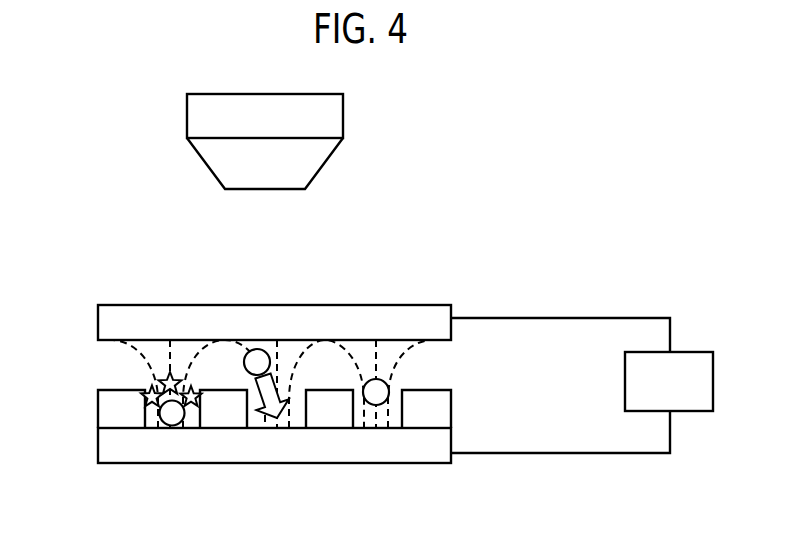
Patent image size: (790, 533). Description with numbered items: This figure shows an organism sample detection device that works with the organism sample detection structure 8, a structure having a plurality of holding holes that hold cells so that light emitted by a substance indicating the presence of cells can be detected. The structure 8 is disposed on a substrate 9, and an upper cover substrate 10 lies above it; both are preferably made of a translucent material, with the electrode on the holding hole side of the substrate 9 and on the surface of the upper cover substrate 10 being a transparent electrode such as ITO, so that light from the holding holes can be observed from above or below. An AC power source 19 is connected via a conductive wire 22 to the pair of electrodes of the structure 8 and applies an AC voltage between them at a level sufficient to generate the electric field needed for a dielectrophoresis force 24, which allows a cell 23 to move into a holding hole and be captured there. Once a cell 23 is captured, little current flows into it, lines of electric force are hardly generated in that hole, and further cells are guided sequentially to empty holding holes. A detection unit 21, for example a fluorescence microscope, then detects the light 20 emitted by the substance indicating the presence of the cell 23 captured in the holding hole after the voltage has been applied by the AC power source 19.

The organism sample detection structure 8 is at (393, 428).
The substrate 9 is at (272, 462).
The upper cover substrate 10 is at (115, 308).
The AC power source 19 is at (669, 381).
The light 20 is at (138, 383).
The detection unit 21 is at (315, 117).
The conductive wire 22 is at (560, 368).
The cell 23 is at (252, 352).
The dielectrophoresis force 24 is at (271, 392).